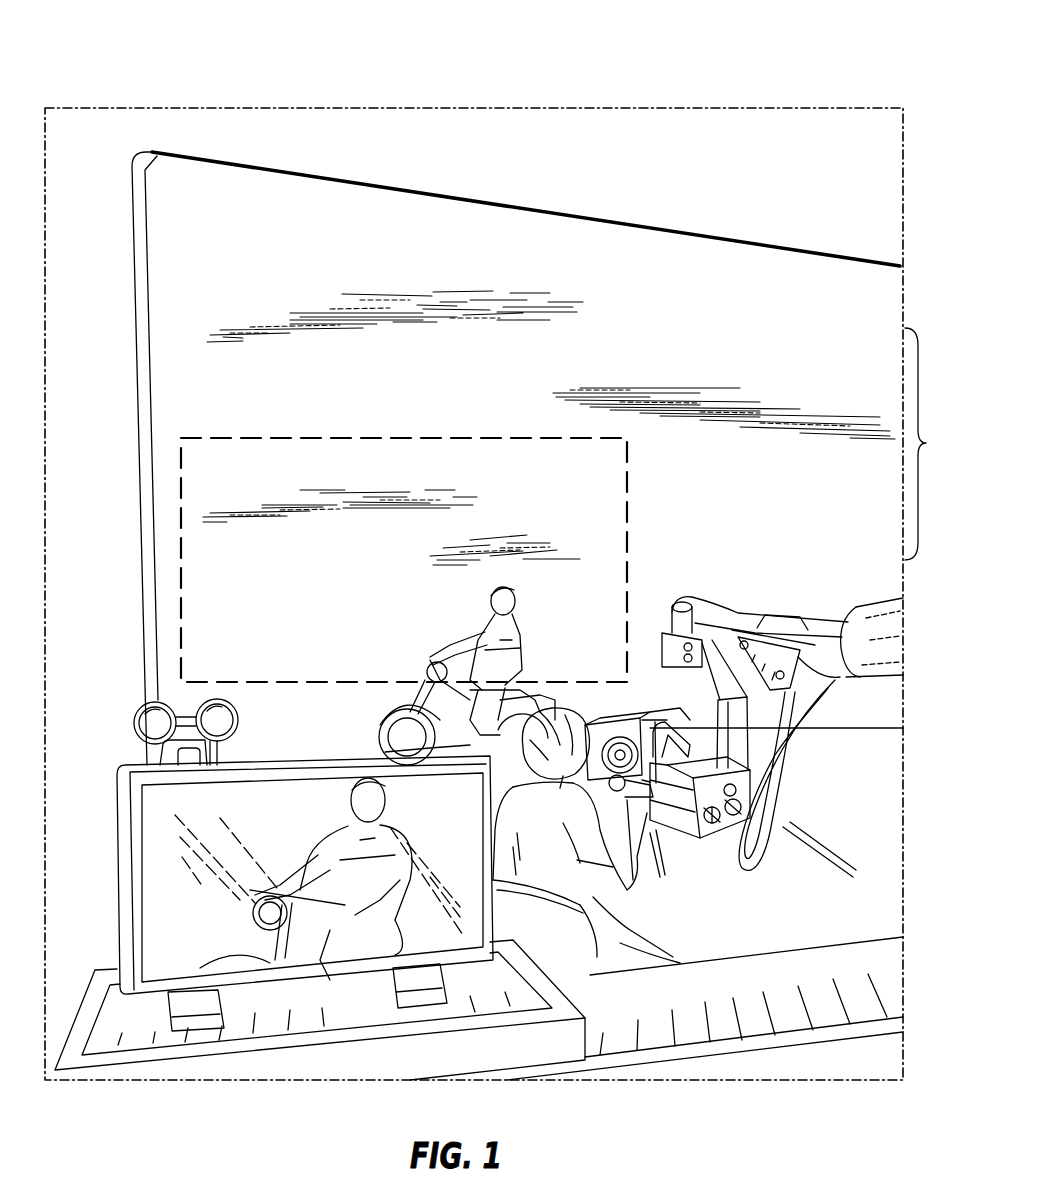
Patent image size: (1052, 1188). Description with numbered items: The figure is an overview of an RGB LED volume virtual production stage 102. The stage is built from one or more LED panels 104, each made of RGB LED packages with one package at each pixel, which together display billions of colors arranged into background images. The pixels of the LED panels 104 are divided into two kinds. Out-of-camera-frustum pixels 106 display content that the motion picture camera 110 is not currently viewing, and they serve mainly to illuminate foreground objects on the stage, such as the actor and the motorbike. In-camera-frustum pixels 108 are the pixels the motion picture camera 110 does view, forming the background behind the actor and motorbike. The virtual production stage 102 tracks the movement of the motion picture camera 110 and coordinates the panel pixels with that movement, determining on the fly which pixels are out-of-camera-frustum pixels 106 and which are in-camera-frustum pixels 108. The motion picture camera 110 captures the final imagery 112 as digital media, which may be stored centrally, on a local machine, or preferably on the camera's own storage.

The RGB LED volume virtual production stage 102 is at (98, 86).
The LED panels 104 is at (338, 284).
The out-of-camera-frustum pixels 106 is at (933, 444).
The in-camera-frustum pixels 108 is at (256, 486).
The motion picture camera 110 is at (677, 782).
The final imagery 112 is at (178, 833).